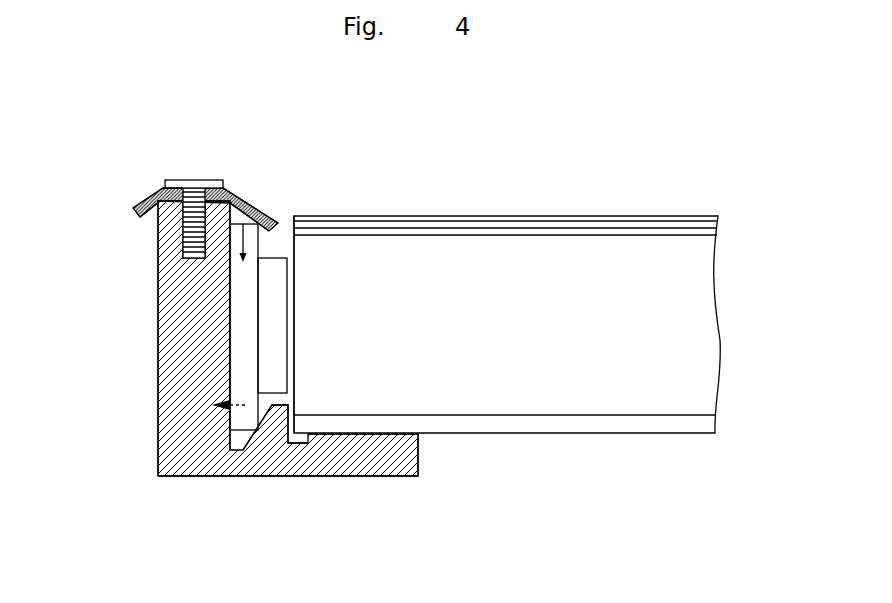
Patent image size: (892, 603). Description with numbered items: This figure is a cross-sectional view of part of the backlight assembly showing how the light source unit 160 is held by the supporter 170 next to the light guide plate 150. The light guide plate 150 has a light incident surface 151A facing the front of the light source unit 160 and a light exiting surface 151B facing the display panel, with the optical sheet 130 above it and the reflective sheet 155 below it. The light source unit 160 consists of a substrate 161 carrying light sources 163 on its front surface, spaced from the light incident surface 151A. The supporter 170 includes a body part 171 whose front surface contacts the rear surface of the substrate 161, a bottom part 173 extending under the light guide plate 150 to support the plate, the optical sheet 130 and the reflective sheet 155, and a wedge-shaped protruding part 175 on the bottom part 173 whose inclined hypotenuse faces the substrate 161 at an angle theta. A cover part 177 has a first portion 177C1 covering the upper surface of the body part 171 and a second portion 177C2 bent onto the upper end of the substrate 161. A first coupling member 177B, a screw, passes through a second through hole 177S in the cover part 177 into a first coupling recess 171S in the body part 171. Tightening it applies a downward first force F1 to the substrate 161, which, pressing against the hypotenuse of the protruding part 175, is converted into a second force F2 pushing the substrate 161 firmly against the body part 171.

The optical sheet 130 is at (726, 214).
The light guide plate 150 is at (705, 333).
The light incident surface 151A is at (303, 323).
The light exiting surface 151B is at (469, 244).
The reflective sheet 155 is at (700, 421).
The light source unit 160 is at (83, 275).
The substrate 161 is at (240, 323).
The light sources 163 is at (265, 283).
The supporter 170 is at (147, 407).
The body part 171 is at (158, 362).
The first coupling recess 171S is at (173, 243).
The bottom part 173 is at (357, 455).
The protruding part 175 is at (300, 428).
The cover part 177 is at (133, 197).
The first portion 177C1 is at (165, 193).
The second portion 177C2 is at (246, 196).
The first coupling member 177B is at (210, 180).
The second through hole 177S is at (164, 186).
The first force F1 is at (266, 238).
The second force F2 is at (236, 402).